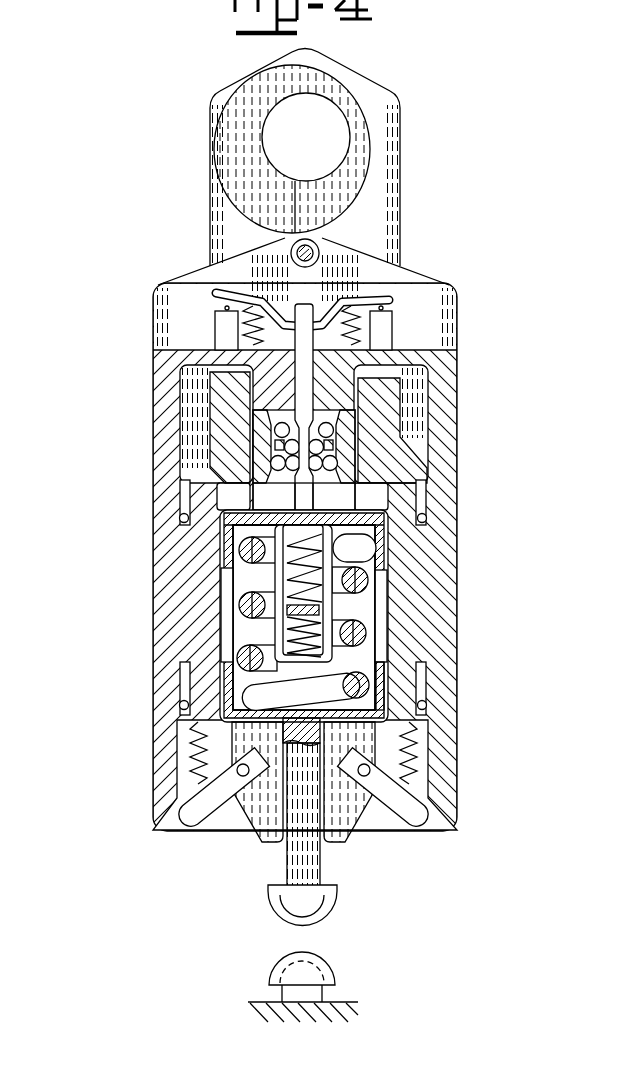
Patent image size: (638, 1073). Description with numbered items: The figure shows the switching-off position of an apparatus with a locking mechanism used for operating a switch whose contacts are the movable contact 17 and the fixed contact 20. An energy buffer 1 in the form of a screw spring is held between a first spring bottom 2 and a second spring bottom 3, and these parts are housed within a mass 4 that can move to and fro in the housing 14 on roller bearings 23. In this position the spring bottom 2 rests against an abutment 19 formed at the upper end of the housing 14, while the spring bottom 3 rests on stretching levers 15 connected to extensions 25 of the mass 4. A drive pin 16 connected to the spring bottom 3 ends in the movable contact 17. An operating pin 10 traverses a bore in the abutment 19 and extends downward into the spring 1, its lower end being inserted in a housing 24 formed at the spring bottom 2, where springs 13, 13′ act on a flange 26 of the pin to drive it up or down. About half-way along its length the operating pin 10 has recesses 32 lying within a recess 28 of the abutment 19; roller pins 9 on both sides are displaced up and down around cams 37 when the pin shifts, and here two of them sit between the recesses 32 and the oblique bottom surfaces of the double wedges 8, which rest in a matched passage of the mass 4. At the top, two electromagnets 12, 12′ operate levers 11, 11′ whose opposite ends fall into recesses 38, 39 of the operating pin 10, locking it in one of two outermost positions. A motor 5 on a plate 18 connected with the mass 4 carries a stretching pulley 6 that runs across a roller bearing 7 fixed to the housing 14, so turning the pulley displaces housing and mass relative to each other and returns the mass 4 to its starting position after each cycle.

The energy buffer 1 is at (360, 637).
The first spring bottom 2 is at (383, 542).
The second spring bottom 3 is at (387, 682).
The mass 4 is at (403, 607).
The motor 5 is at (330, 135).
The stretching pulley 6 is at (233, 160).
The roller bearing 7 is at (316, 250).
The double wedge 8 is at (262, 440).
The roller pins 9 is at (270, 418).
The operating pin 10 is at (314, 495).
The lever 11 is at (390, 300).
The lever 11′ is at (216, 293).
The electromagnet 12 is at (392, 322).
The electromagnet 12′ is at (215, 322).
The spring 13 is at (340, 650).
The spring 13′ is at (340, 575).
The housing 14 is at (437, 743).
The stretching levers 15 is at (198, 813).
The drive pin 16 is at (310, 863).
The movable contact 17 is at (323, 912).
The plate 18 is at (385, 183).
The abutment 19 is at (272, 497).
The contact 20 is at (320, 956).
The roller bearings 23 is at (179, 518).
The housing 24 is at (280, 630).
The extensions 25 is at (250, 817).
The flange 26 is at (286, 603).
The recess 28 is at (245, 430).
The recesses 32 is at (362, 405).
The cams 37 is at (275, 452).
The recess 38 is at (316, 300).
The recess 39 is at (283, 345).